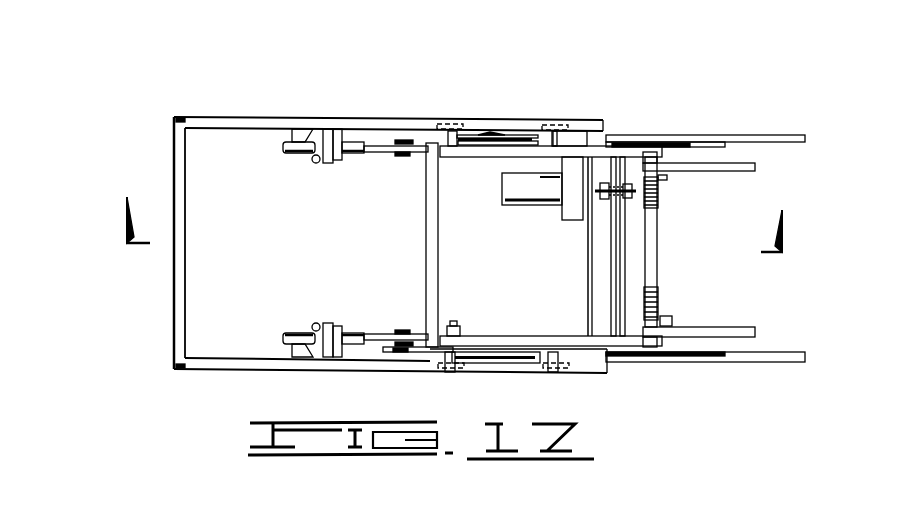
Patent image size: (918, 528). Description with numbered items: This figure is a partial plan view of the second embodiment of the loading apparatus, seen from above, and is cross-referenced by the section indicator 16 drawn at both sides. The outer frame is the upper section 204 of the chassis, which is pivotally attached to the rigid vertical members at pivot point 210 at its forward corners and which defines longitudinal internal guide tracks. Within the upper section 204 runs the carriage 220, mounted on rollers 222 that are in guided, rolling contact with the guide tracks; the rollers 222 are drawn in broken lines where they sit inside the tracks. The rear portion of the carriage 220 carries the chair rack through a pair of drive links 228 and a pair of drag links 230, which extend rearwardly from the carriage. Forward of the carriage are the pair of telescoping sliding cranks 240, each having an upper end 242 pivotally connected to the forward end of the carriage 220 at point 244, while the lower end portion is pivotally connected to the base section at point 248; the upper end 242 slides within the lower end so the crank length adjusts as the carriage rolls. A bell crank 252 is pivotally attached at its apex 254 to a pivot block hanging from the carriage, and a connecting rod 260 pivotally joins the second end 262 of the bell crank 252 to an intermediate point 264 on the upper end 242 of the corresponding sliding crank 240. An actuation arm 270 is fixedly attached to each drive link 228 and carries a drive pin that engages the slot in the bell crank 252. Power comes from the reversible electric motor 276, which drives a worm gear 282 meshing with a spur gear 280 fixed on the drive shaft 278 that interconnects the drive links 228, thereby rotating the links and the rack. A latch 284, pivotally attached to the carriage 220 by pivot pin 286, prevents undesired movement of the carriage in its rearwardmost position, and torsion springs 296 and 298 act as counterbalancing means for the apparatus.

The section line 16 is at (458, 210).
The upper section 204 is at (238, 116).
The pivot point 210 is at (178, 116).
The carriage 220 is at (600, 146).
The rollers 222 is at (450, 122).
The drive links 228 is at (746, 136).
The drag links 230 is at (748, 170).
The sliding crank 240 is at (340, 163).
The upper end 242 is at (378, 153).
The point 244 is at (452, 324).
The point 248 is at (307, 325).
The bell crank 252 is at (500, 136).
The apex 254 is at (533, 152).
The connecting rod 260 is at (410, 365).
The second end 262 is at (483, 132).
The intermediate point 264 is at (398, 335).
The actuation arm 270 is at (680, 137).
The reversible electric motor 276 is at (530, 190).
The drive shaft 278 is at (613, 257).
The spur gear 280 is at (602, 196).
The worm gear 282 is at (616, 193).
The latch 284 is at (515, 358).
The pivot pin 286 is at (520, 364).
The torsion spring 296 is at (658, 296).
The torsion spring 298 is at (658, 192).